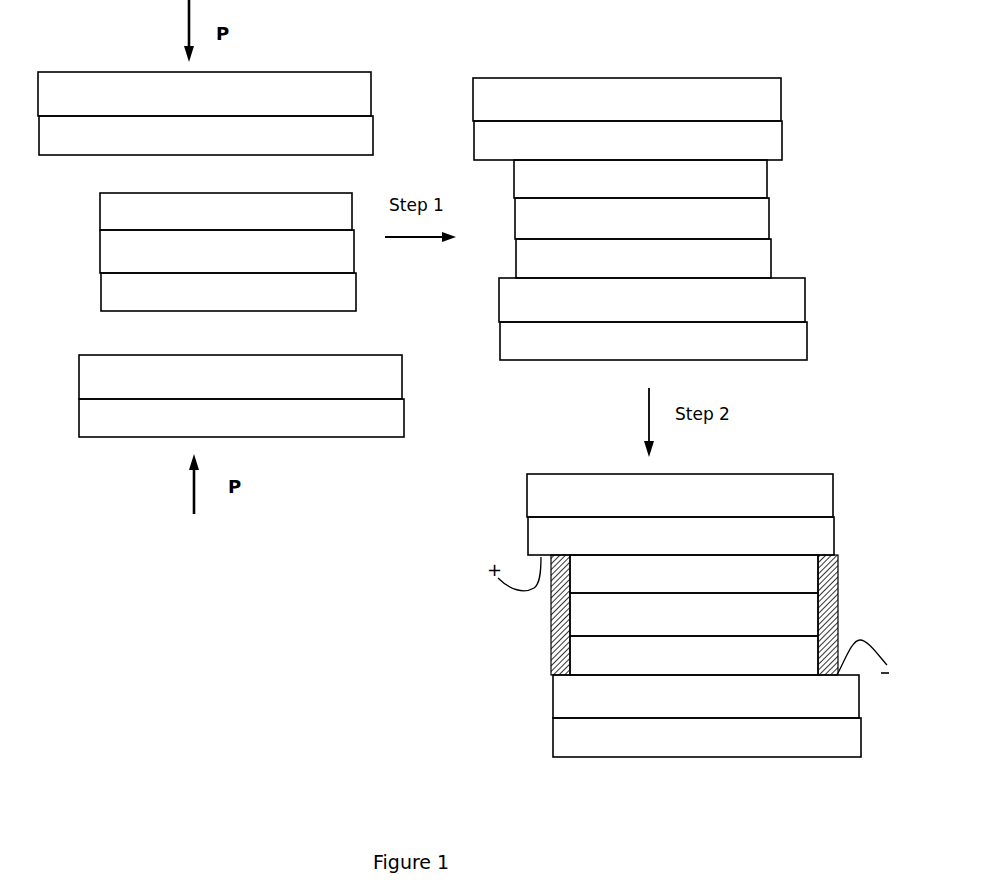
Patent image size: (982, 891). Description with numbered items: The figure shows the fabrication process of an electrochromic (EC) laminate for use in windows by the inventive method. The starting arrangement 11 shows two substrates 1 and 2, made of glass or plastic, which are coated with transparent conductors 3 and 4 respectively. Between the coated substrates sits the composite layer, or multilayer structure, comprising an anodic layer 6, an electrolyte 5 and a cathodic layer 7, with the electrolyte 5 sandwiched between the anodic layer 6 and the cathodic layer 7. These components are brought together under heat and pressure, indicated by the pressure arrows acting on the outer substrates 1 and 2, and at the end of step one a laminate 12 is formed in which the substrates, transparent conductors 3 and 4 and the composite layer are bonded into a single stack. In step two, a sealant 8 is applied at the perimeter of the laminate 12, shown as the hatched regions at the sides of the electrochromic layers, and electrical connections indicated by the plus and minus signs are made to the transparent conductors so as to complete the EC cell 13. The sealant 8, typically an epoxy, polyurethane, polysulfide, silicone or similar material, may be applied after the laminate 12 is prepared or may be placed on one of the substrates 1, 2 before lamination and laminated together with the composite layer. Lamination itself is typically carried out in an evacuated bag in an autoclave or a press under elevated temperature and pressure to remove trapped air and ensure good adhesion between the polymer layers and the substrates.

The substrate 1 is at (435, 294).
The substrate 2 is at (470, 539).
The transparent conductor 3 is at (436, 335).
The transparent conductor 4 is at (469, 498).
The electrolyte 5 is at (459, 417).
The anodic layer 6 is at (459, 376).
The cathodic layer 7 is at (459, 457).
The sealant 8 is at (827, 581).
The layer arrangement before lamination 11 is at (113, 467).
The laminate 12 is at (710, 55).
The EC cell 13 is at (478, 705).